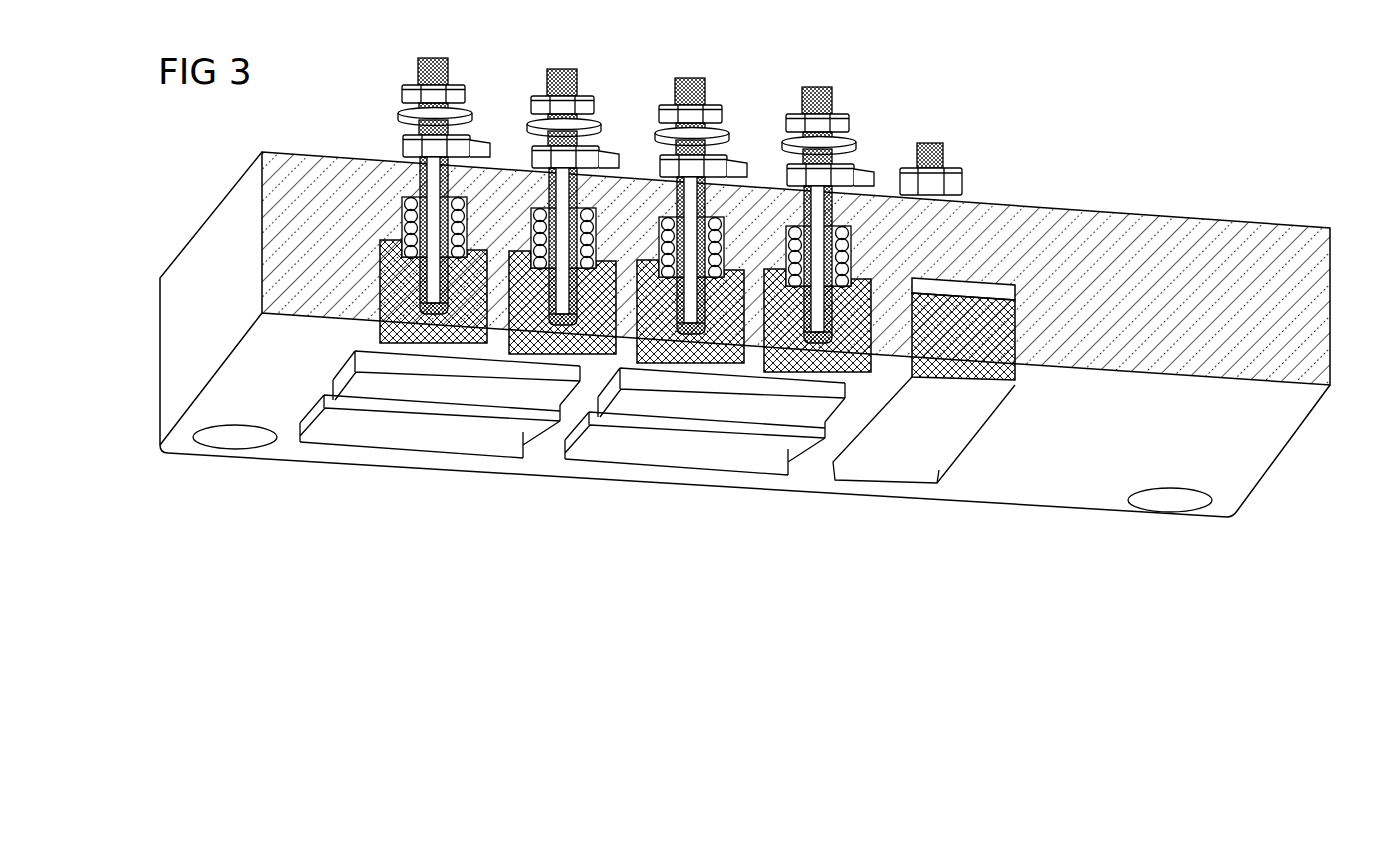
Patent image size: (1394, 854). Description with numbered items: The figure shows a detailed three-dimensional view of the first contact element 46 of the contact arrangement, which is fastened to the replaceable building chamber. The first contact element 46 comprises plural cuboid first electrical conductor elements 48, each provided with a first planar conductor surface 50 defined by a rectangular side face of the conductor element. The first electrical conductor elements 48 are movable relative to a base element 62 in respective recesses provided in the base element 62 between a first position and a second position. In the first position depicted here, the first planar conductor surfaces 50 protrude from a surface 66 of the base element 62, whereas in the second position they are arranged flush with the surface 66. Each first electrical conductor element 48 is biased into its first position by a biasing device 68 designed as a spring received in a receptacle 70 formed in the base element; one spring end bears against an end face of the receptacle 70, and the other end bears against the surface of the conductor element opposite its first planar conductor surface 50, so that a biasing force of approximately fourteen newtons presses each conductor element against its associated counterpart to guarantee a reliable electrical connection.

The first contact element 46 is at (1200, 228).
The first electrical conductor element 48 is at (437, 356).
The first planar conductor surface 50 is at (658, 370).
The base element 62 is at (1318, 303).
The surface 66 is at (1250, 460).
The biasing device 68 is at (528, 173).
The receptacle 70 is at (664, 208).